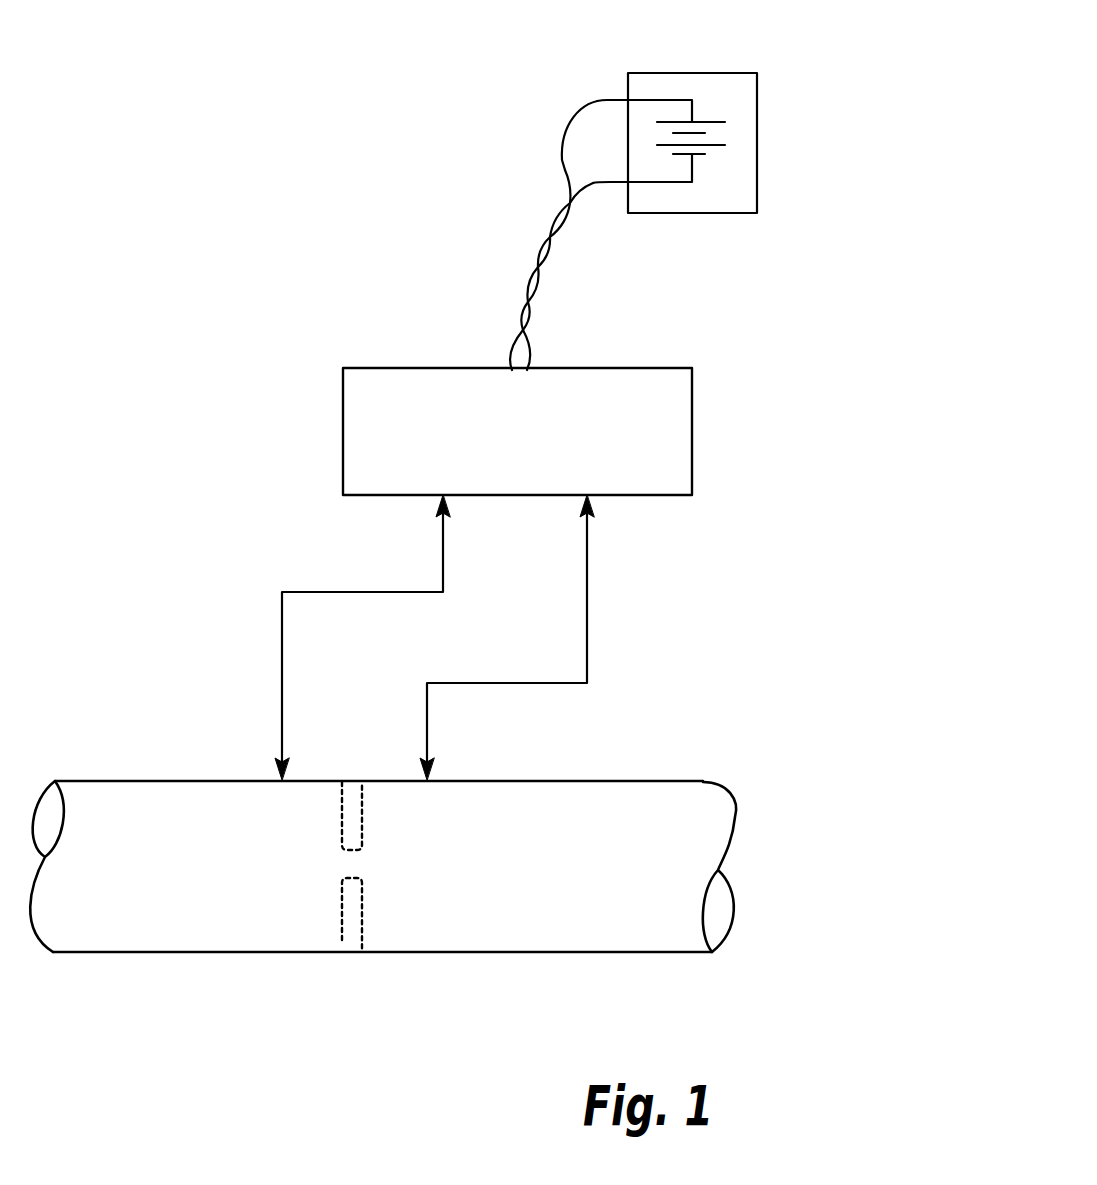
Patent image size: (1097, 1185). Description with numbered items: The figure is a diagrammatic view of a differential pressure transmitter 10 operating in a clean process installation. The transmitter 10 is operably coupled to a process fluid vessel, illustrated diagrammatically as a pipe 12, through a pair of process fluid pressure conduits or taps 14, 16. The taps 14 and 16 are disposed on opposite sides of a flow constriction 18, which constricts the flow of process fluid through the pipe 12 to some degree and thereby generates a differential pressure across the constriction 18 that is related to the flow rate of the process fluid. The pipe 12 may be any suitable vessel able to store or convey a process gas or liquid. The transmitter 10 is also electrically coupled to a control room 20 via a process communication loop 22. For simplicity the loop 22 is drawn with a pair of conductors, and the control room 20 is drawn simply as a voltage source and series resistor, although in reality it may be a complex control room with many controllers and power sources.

The differential pressure transmitter 10 is at (692, 447).
The pipe 12 is at (665, 775).
The process fluid pressure tap 14 is at (310, 592).
The process fluid pressure tap 16 is at (587, 653).
The flow constriction 18 is at (365, 907).
The control room 20 is at (652, 73).
The process communication loop 22 is at (547, 233).